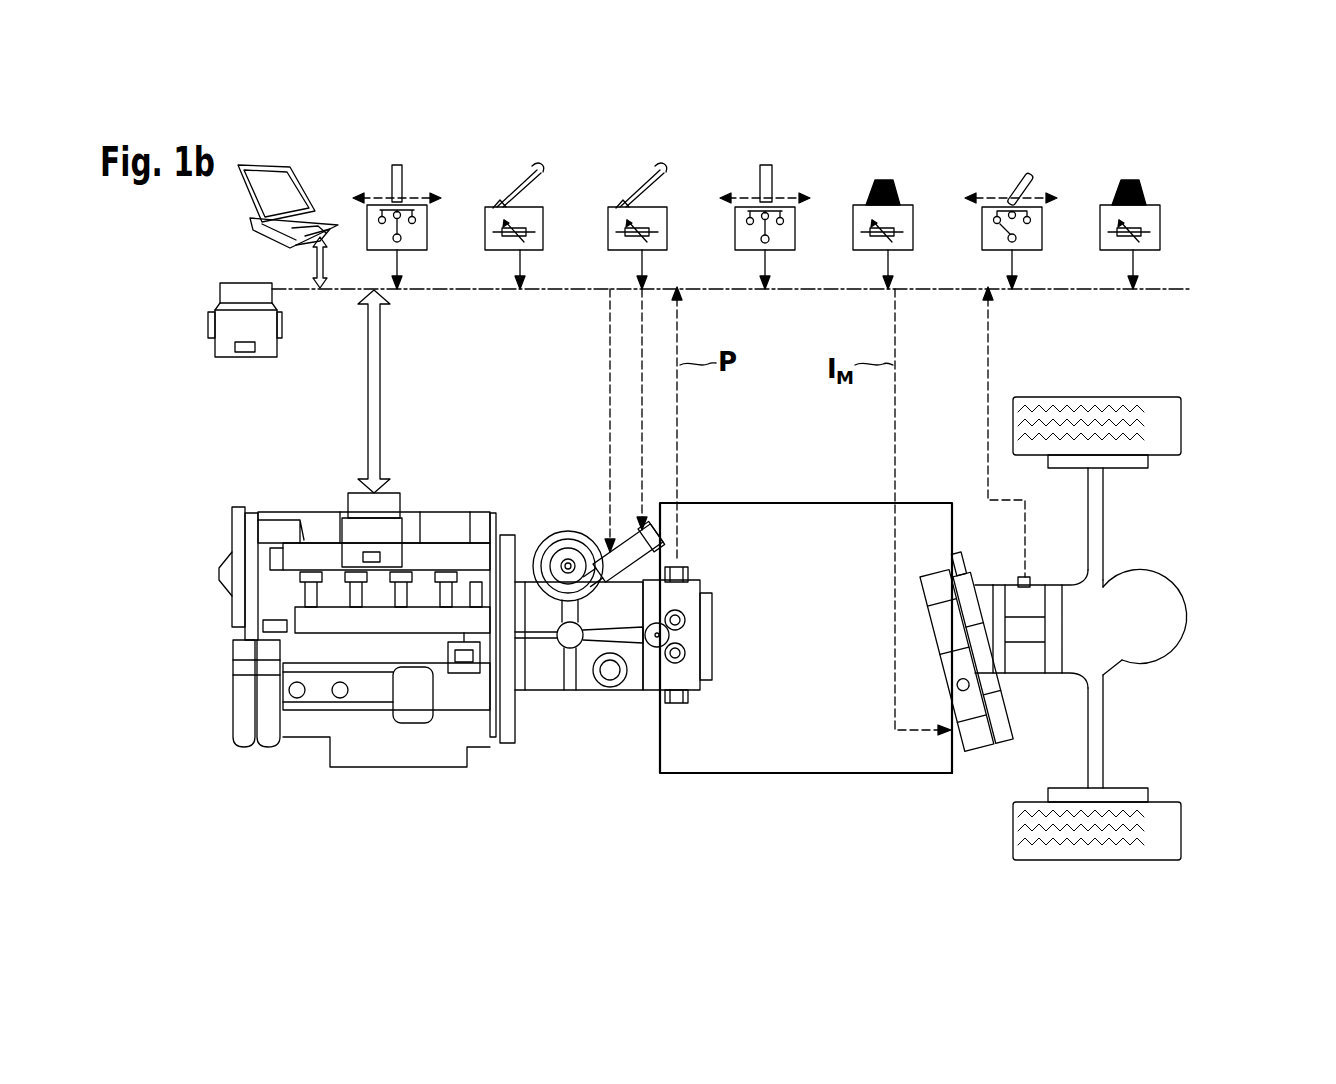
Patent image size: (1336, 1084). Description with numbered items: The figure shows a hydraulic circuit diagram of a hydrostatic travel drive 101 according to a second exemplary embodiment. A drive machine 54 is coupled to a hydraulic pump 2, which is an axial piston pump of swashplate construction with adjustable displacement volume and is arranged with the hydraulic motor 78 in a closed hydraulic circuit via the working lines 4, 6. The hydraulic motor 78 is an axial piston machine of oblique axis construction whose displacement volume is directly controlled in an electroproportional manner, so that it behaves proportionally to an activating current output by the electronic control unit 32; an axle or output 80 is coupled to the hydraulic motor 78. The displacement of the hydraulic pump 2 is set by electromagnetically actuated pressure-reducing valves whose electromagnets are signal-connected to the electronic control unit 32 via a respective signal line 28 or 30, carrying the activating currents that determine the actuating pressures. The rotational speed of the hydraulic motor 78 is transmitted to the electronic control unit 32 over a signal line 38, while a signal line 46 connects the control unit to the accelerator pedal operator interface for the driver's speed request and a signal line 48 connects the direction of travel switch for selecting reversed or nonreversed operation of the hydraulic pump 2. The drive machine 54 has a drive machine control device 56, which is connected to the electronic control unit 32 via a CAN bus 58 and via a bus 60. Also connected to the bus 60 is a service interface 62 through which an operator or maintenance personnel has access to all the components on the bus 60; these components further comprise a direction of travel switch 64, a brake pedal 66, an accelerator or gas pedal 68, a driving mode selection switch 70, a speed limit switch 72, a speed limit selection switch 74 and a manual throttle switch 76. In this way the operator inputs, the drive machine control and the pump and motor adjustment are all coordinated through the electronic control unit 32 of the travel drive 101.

The hydraulic pump 2 is at (585, 680).
The working line 4 is at (784, 505).
The working line 6 is at (783, 777).
The signal line 28 is at (609, 365).
The signal line 30 is at (641, 398).
The electronic control unit 32 is at (263, 348).
The signal line 38 is at (987, 365).
The signal line 46 is at (644, 262).
The signal line 48 is at (398, 262).
The drive machine 54 is at (340, 750).
The drive machine control device 56 is at (347, 497).
The CAN bus 58 is at (381, 448).
The bus 60 is at (452, 292).
The service interface 62 is at (290, 164).
The direction of travel switch 64 is at (398, 165).
The brake pedal 66 is at (544, 163).
The accelerator or gas pedal 68 is at (669, 163).
The driving mode selection switch 70 is at (770, 165).
The speed limit switch 72 is at (888, 178).
The speed limit selection switch 74 is at (998, 172).
The manual throttle switch 76 is at (1132, 178).
The hydraulic motor 78 is at (1033, 631).
The axle or output 80 is at (1195, 426).
The hydrostatic travel drive 101 is at (1228, 192).